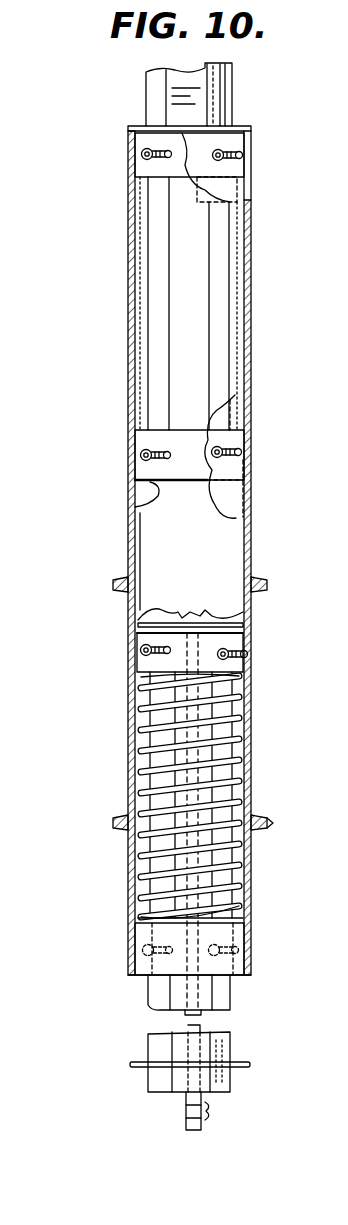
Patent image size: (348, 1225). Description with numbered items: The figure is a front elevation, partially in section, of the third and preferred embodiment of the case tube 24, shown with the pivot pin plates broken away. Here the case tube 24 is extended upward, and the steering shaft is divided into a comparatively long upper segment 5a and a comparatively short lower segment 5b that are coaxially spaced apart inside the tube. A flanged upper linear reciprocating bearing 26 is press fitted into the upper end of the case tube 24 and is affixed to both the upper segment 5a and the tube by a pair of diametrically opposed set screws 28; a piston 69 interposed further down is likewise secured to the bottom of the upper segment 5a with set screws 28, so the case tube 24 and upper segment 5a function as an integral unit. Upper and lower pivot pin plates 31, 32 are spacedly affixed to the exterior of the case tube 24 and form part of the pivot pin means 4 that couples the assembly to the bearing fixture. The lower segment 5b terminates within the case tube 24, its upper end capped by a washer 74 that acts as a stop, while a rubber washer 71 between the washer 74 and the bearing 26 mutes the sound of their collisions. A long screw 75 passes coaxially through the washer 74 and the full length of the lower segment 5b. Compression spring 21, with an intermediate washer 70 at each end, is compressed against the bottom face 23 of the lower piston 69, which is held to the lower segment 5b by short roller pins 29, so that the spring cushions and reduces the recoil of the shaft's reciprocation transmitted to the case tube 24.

The pivot pin means 4 is at (295, 531).
The upper bar section 5a is at (152, 90).
The lower bar section 5b is at (133, 1042).
The compression spring 21 is at (230, 765).
The bottom face 23 is at (143, 980).
The case tube 24 is at (132, 772).
The flanged upper linear reciprocating bearing 26 is at (140, 126).
The set screws 28 is at (241, 154).
The roller pins 29 is at (235, 950).
The upper pivot pin plate 31 is at (262, 575).
The lower pivot pin plate 32 is at (268, 812).
The piston 69 is at (133, 510).
The intermediate washer 70 is at (235, 708).
The rubber washer 71 is at (243, 634).
The washer 74 is at (232, 620).
The long screw 75 is at (142, 612).